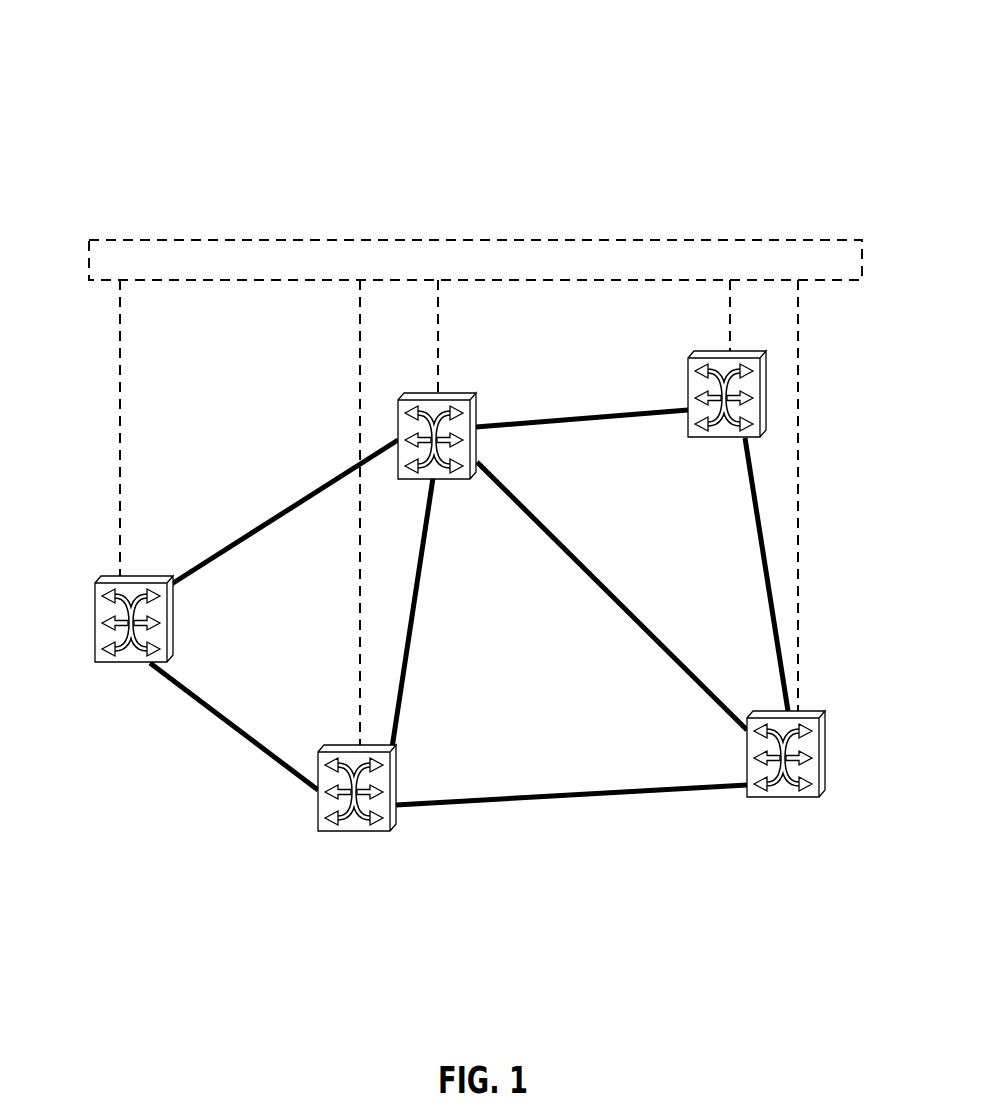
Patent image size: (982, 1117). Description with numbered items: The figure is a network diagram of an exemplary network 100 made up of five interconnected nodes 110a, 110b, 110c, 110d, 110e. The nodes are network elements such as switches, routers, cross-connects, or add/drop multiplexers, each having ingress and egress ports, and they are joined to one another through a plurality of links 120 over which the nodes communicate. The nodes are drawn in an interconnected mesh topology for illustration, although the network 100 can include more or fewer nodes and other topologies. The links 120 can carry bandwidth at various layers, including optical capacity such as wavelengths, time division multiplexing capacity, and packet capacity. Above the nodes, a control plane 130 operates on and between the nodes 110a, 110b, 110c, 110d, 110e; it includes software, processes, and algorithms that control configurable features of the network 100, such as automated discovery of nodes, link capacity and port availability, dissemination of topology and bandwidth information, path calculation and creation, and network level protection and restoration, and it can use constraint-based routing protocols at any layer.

The network 100 is at (548, 64).
The node 110a is at (95, 662).
The node 110b is at (466, 393).
The node 110c is at (720, 438).
The node 110d is at (785, 798).
The node 110e is at (345, 830).
The links 120 is at (270, 523).
The control plane 130 is at (620, 240).